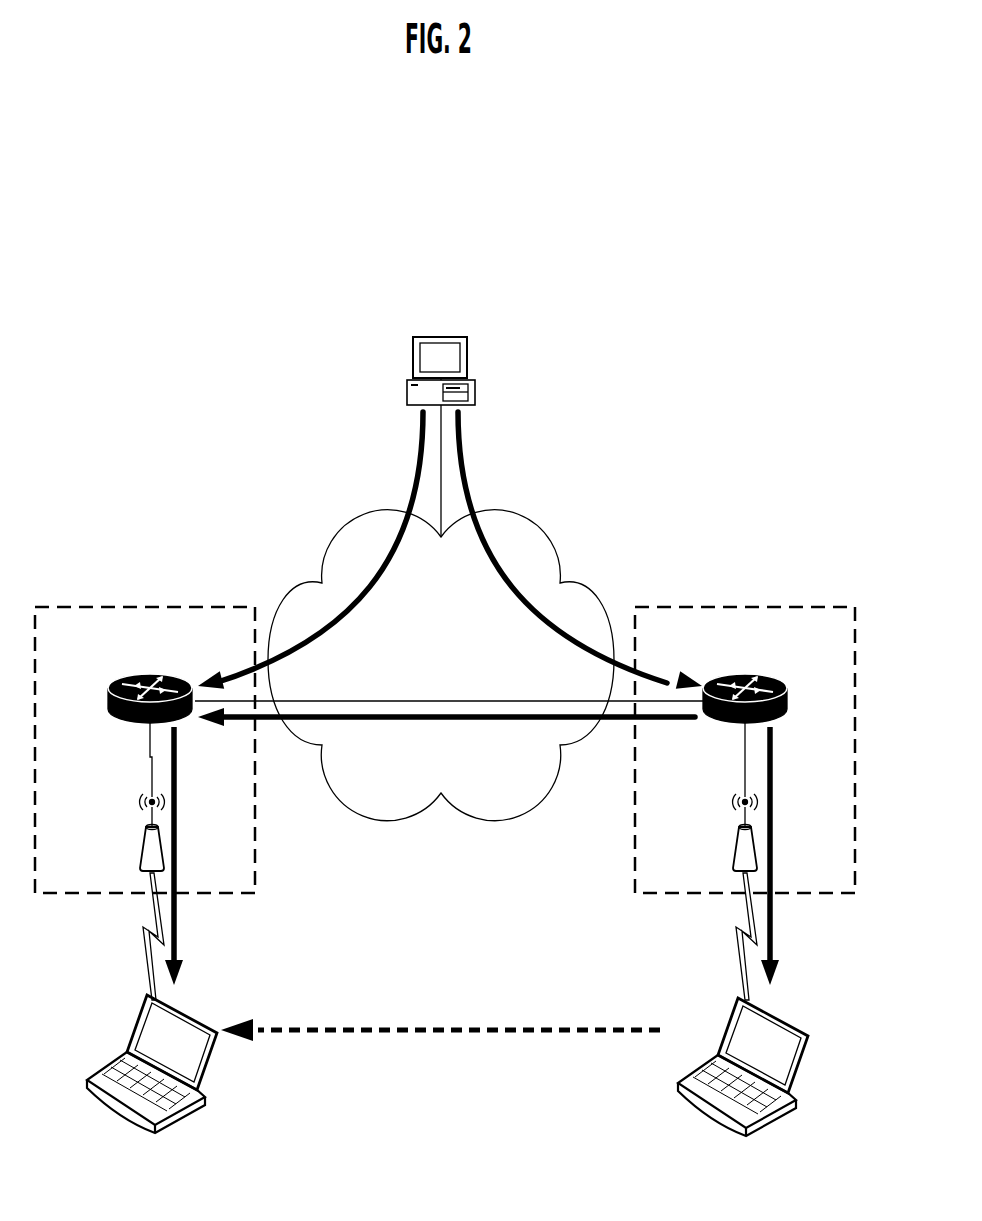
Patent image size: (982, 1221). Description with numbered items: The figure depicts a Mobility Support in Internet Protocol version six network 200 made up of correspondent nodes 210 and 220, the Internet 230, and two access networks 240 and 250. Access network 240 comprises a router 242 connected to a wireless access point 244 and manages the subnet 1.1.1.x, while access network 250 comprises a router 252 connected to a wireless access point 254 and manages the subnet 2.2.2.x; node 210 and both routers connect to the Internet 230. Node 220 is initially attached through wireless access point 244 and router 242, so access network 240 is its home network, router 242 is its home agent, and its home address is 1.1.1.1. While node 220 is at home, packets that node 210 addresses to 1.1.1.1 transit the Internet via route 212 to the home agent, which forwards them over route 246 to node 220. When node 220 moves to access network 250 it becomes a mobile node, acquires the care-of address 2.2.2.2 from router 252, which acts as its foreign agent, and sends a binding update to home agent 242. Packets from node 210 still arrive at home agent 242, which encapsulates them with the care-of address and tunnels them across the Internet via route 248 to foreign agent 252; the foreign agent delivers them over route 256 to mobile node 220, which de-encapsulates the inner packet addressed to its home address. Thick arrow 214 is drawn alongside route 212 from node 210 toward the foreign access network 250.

The MIPv6 network 200 is at (677, 217).
The correspondent node 210 is at (440, 334).
The route 212 is at (471, 475).
The data path to foreign network 214 is at (410, 474).
The correspondent node / mobile node 220 is at (122, 1046).
The Internet 230 is at (576, 583).
The access network 240 is at (796, 606).
The router 242 is at (771, 672).
The wireless access point 244 is at (734, 840).
The route 246 is at (776, 938).
The route 248 is at (373, 722).
The access network 250 is at (72, 606).
The router 252 is at (137, 672).
The wireless access point 254 is at (140, 840).
The route 256 is at (178, 931).